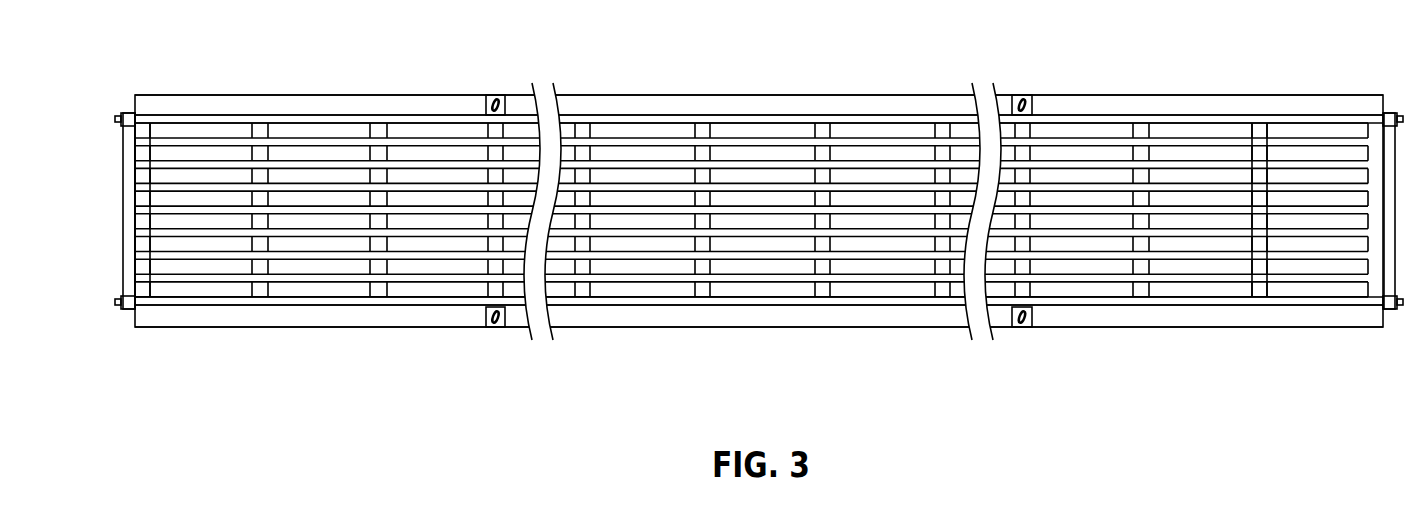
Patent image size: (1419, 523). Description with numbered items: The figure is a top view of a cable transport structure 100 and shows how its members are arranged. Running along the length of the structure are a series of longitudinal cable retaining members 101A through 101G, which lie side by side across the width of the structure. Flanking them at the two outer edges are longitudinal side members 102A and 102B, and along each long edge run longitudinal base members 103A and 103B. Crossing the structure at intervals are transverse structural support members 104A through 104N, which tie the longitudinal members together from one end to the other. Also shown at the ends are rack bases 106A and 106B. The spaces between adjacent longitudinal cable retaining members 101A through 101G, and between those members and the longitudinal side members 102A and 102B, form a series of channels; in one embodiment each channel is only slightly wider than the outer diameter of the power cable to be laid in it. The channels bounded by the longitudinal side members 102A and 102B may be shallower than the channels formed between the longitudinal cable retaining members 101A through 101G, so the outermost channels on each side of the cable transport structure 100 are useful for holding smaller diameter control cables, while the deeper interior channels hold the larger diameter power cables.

The cable transport structure 100 is at (800, 342).
The longitudinal cable retaining member 101A is at (348, 140).
The longitudinal cable retaining member 101G is at (412, 276).
The longitudinal side member 102A is at (218, 118).
The longitudinal side member 102B is at (190, 302).
The longitudinal base member 103A is at (290, 103).
The longitudinal base member 103B is at (330, 320).
The transverse structural support member 104A is at (144, 130).
The transverse structural support member 104N is at (1260, 130).
The rack base 106A is at (122, 114).
The rack base 106B is at (124, 309).